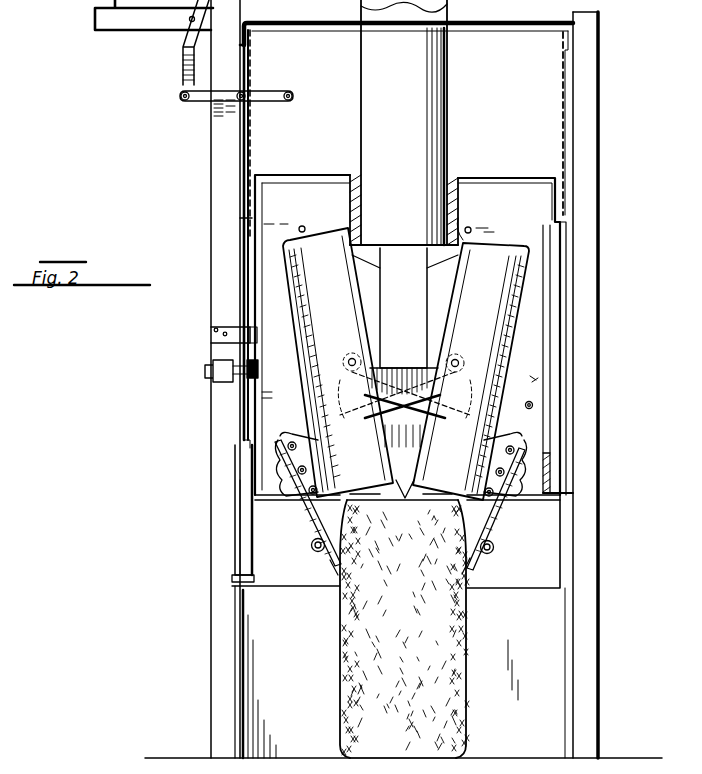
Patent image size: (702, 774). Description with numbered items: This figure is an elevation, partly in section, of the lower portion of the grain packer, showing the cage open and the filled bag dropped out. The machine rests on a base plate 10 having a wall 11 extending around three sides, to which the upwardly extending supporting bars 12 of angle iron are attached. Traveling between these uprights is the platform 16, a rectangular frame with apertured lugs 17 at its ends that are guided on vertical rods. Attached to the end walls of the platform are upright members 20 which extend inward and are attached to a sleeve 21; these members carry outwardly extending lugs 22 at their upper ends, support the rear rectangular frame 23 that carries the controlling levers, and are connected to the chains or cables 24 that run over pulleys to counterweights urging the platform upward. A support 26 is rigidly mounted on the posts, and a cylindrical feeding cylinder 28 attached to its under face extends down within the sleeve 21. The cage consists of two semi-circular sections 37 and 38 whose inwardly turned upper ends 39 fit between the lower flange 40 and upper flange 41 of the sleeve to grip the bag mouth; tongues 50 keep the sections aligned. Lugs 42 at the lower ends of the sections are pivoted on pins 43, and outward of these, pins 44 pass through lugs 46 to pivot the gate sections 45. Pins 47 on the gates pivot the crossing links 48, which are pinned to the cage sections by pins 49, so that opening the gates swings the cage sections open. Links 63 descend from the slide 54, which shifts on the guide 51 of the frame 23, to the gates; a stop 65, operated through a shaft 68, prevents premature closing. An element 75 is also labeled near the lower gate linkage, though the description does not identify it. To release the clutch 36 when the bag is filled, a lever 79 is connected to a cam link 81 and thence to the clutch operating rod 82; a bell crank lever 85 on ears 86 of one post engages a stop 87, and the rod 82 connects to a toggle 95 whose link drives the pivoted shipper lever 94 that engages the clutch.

The base plate 10 is at (630, 760).
The wall 11 is at (580, 630).
The supporting bars 12 is at (592, 110).
The platform 16 is at (552, 464).
The lugs 17 is at (566, 492).
The upright members 20 is at (553, 300).
The sleeve 21 is at (340, 183).
The lugs 22 is at (562, 221).
The rectangular frame 23 is at (536, 378).
The chains or cables 24 is at (250, 56).
The support 26 is at (495, 25).
The feeding cylinder 28 is at (360, 78).
The clutch 36 is at (390, 254).
The cage section 37 is at (520, 346).
The cage section 38 is at (345, 392).
The inwardly turned upper ends 39 is at (292, 228).
The lower flange or shoulder 40 is at (470, 228).
The upper flange or shoulder 41 is at (460, 222).
The lugs 42 is at (498, 500).
The pivot pins 43 is at (318, 512).
The pivot pins 44 is at (300, 482).
The gate sections 45 is at (330, 570).
The lugs 46 is at (290, 462).
The pins 47 is at (290, 438).
The links 48 is at (430, 404).
The pins 49 is at (458, 358).
The tongues 50 is at (450, 266).
The guide 51 is at (386, 292).
The slide 54 is at (404, 372).
The links 63 is at (310, 548).
The stop 65 is at (456, 292).
The shaft 68 is at (538, 404).
The link end 75 is at (480, 566).
The lever 79 is at (237, 544).
The cam link 81 is at (240, 522).
The clutch operating rod 82 is at (236, 172).
The bell crank lever 85 is at (240, 416).
The ears 86 is at (210, 374).
The stop 87 is at (212, 333).
The shipper lever 94 is at (180, 58).
The toggle 95 is at (196, 104).